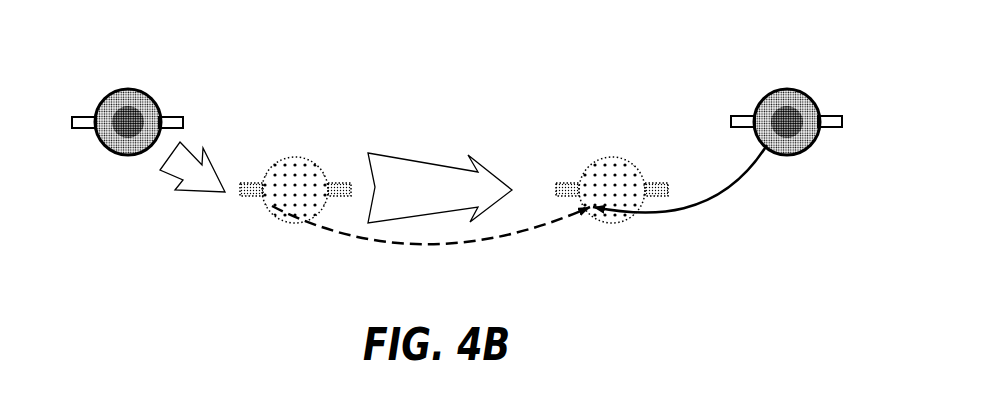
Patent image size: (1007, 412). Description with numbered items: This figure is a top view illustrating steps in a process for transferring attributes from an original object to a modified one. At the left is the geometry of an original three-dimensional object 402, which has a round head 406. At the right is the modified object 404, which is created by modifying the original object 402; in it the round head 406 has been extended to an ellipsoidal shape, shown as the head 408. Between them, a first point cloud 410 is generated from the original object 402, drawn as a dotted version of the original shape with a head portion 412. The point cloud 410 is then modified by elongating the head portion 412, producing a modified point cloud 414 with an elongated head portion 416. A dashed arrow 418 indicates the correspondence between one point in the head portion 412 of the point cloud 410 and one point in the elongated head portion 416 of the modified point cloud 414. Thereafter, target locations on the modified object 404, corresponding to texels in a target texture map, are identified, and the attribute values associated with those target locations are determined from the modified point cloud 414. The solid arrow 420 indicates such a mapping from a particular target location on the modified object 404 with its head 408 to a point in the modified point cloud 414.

The original 3-D object 402 is at (77, 157).
The modified object 404 is at (837, 155).
The round head 406 is at (152, 93).
The head 408 is at (770, 90).
The first point cloud 410 is at (248, 235).
The head portion 412 is at (310, 160).
The modified point cloud 414 is at (592, 232).
The elongated head portion 416 is at (585, 167).
The dashed arrow 418 is at (467, 245).
The arrow 420 is at (725, 195).